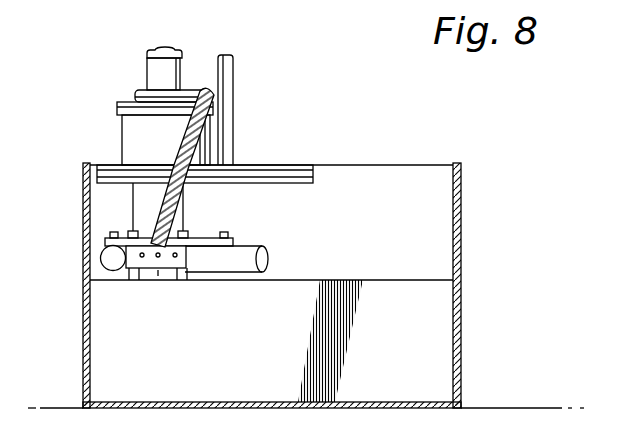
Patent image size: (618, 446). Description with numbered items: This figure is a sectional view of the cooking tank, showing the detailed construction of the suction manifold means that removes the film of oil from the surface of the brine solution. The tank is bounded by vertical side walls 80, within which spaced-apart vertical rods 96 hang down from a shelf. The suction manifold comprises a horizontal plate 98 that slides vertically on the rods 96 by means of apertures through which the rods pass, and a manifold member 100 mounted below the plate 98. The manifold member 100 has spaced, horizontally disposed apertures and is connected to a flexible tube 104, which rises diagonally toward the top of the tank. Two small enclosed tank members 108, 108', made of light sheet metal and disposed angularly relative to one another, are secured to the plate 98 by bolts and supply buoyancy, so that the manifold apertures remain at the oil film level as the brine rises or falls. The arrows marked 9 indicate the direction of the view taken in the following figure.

The tank 80 is at (90, 341).
The support rods 96 is at (131, 204).
The cross bar 98 is at (200, 239).
The mounting plate 100 is at (180, 274).
The cable 104 is at (203, 135).
The roller 108 is at (118, 289).
The cylindrical roller 108' is at (258, 256).
The section line for FIG. 9 is at (148, 203).